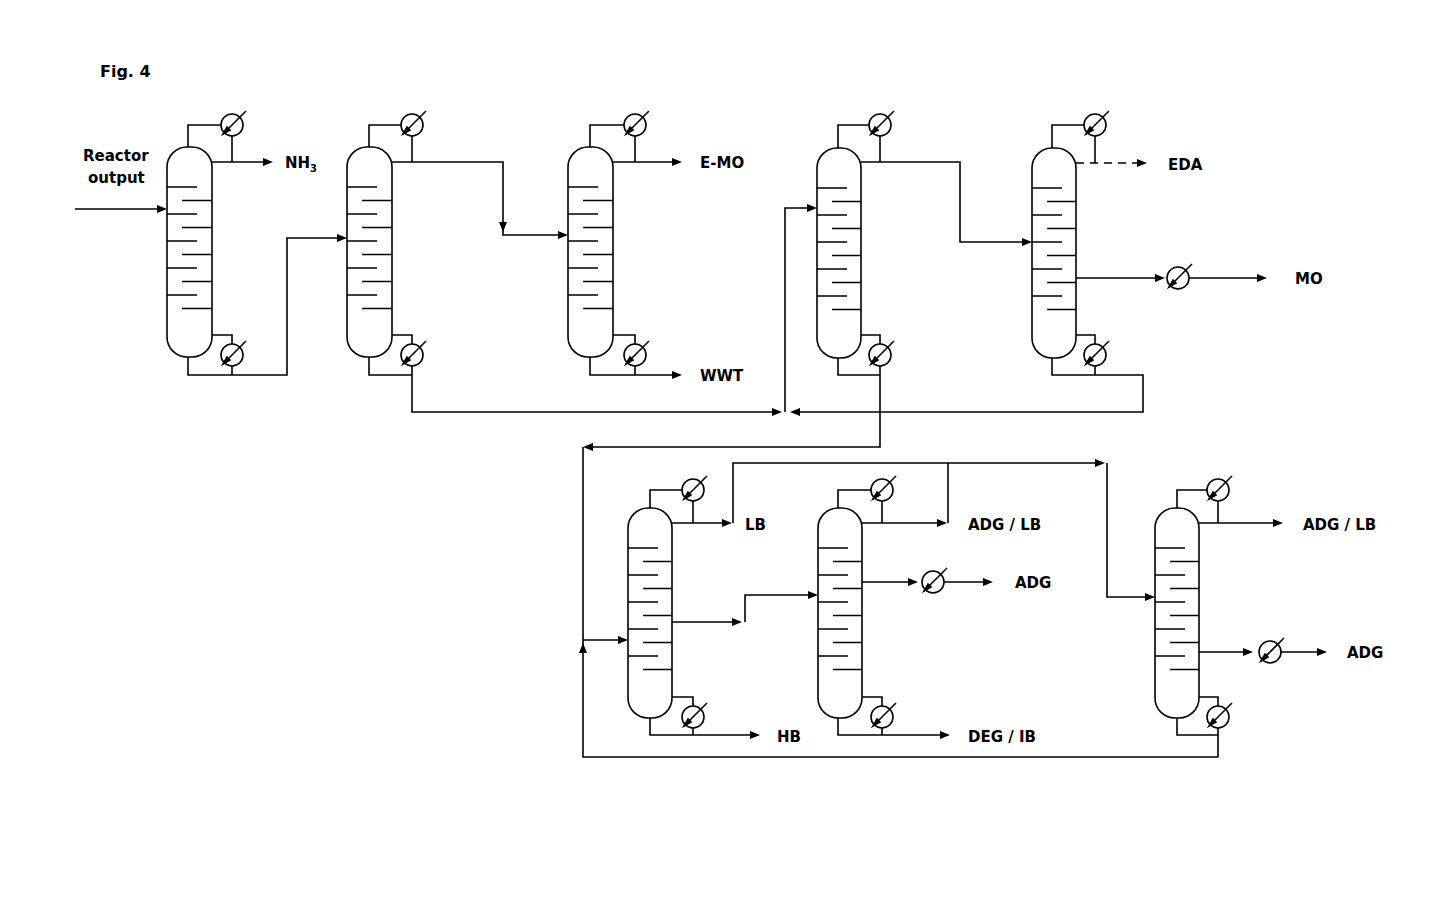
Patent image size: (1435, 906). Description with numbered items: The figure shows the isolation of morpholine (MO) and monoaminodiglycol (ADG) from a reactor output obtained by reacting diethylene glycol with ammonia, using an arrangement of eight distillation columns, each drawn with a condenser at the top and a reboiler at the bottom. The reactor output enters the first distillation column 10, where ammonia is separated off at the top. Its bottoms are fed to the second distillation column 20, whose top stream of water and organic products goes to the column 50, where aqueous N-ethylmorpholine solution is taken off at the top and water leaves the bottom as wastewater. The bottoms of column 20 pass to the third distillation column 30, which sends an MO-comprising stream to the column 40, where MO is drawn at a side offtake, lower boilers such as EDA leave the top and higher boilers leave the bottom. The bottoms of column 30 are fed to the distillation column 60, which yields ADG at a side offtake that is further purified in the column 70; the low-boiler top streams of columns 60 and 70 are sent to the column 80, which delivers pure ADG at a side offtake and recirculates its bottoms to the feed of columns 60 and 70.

The first distillation column 10 is at (257, 243).
The second distillation column 20 is at (564, 263).
The third distillation column 30 is at (807, 281).
The column K40 40 is at (1028, 263).
The column K50 50 is at (625, 245).
The distillation column K60 60 is at (723, 607).
The column K70 70 is at (905, 601).
The column K80 80 is at (1241, 616).